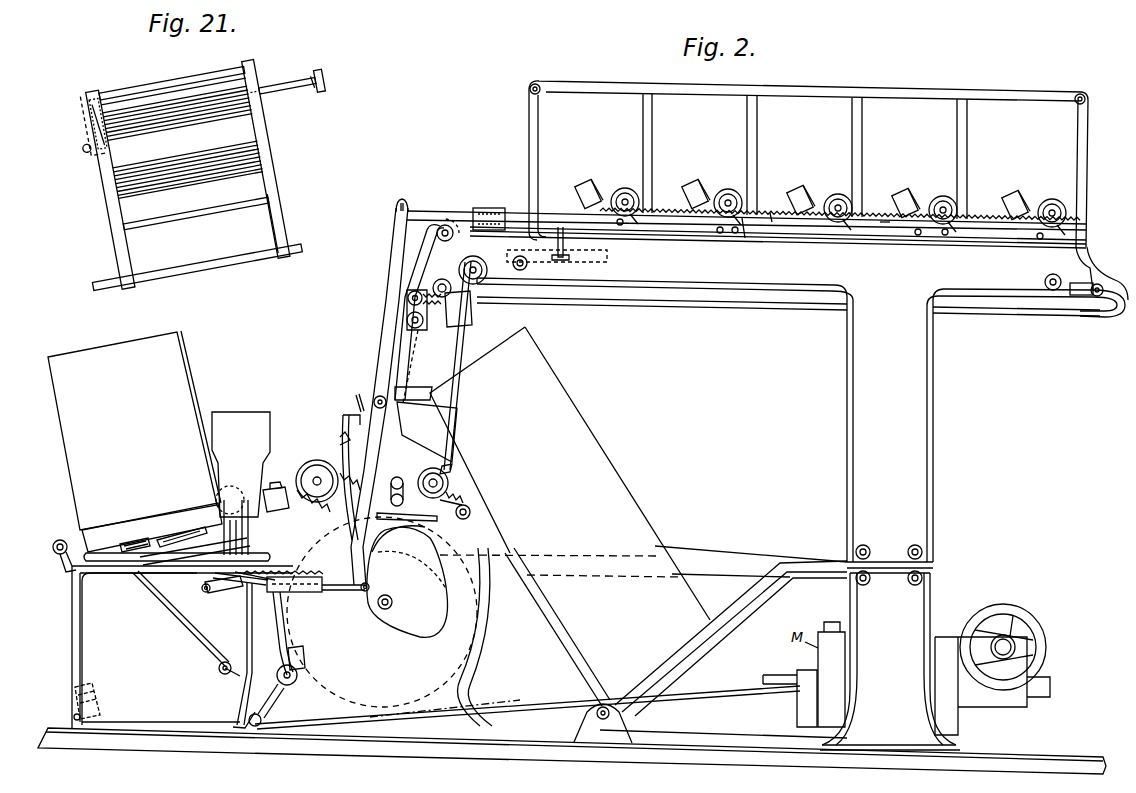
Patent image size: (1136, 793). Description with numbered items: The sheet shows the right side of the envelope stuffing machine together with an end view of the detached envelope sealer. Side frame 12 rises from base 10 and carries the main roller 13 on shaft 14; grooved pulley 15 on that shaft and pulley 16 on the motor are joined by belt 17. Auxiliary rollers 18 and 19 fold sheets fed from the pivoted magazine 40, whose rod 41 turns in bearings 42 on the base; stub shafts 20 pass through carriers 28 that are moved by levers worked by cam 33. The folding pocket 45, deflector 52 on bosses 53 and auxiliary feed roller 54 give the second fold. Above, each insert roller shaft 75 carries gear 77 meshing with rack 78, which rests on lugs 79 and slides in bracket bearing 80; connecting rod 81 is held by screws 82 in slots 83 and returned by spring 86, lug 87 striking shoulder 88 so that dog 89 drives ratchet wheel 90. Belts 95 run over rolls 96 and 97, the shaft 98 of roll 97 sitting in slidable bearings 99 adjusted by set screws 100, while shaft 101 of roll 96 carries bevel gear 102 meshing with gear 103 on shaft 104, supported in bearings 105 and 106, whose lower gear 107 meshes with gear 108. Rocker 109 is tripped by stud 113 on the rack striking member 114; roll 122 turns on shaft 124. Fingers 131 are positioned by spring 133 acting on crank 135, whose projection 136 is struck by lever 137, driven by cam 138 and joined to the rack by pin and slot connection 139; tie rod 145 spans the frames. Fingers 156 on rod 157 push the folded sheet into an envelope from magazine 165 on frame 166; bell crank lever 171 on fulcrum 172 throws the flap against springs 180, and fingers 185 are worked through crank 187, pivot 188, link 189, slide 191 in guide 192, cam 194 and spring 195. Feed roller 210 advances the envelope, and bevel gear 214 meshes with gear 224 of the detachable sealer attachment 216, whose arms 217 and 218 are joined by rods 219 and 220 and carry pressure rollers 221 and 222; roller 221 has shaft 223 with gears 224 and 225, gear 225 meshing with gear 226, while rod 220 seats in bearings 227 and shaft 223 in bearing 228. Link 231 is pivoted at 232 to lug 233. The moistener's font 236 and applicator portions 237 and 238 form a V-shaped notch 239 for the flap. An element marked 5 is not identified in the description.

In FIG. 2, the base 10 is at (750, 762).
In FIG. 2, the side frame 12 is at (934, 475).
In FIG. 2, the main roller 13 is at (402, 706).
In FIG. 2, the shaft 14 is at (384, 610).
In FIG. 2, the grooved pulley 15 is at (480, 678).
In FIG. 2, the grooved pulley 16 is at (1002, 603).
In FIG. 2, the belt 17 is at (712, 691).
In FIG. 2, the auxiliary roller 18 is at (472, 513).
In FIG. 2, the auxiliary roller 19 is at (465, 490).
In FIG. 2, the stub shafts 20 is at (440, 522).
In FIG. 2, the carriers 28 is at (470, 503).
In FIG. 2, the cam 33 is at (440, 548).
In FIG. 2, the magazine 40 is at (608, 472).
In FIG. 2, the rod 41 is at (617, 716).
In FIG. 2, the bearings 42 is at (610, 748).
In FIG. 2, the sheet folding pocket 45 is at (356, 401).
In FIG. 2, the deflector 52 is at (393, 512).
In FIG. 2, the bosses 53 is at (385, 485).
In FIG. 2, the auxiliary feed roller 54 is at (338, 440).
In FIG. 2, the S bar 5 is at (882, 260).
In FIG. 2, the shaft 75 is at (639, 203).
In FIG. 2, the gear 77 is at (620, 190).
In FIG. 2, the rack 78 is at (880, 213).
In FIG. 2, the lugs 79 is at (728, 241).
In FIG. 2, the bracket bearing 80 is at (480, 226).
In FIG. 2, the connecting rod 81 is at (706, 238).
In FIG. 2, the screws 82 is at (624, 230).
In FIG. 2, the longitudinal slots 83 is at (735, 236).
In FIG. 2, the compression spring 86 is at (498, 212).
In FIG. 2, the lug 87 is at (762, 210).
In FIG. 2, the shoulder 88 is at (745, 239).
In FIG. 2, the spring pressed dog 89 is at (648, 214).
In FIG. 2, the ratchet wheel 90 is at (637, 196).
In FIG. 2, the endless belts 95 is at (780, 307).
In FIG. 2, the roll 96 is at (525, 288).
In FIG. 2, the roll 97 is at (1093, 316).
In FIG. 2, the shaft 98 is at (1108, 277).
In FIG. 2, the slidable bearings 99 is at (1098, 283).
In FIG. 2, the set screw 100 is at (1068, 298).
In FIG. 2, the shaft 101 is at (470, 261).
In FIG. 2, the beveled gear 102 is at (459, 266).
In FIG. 2, the beveled gear 103 is at (470, 300).
In FIG. 2, the shaft 104 is at (462, 350).
In FIG. 2, the bearing 105 is at (468, 322).
In FIG. 2, the bearing 106 is at (458, 428).
In FIG. 2, the beveled gear 107 is at (450, 467).
In FIG. 2, the beveled gear 108 is at (450, 480).
In FIG. 2, the rocker 109 is at (557, 264).
In FIG. 2, the stud 113 is at (561, 222).
In FIG. 2, the upstanding member 114 is at (535, 265).
In FIG. 2, the roll 122 is at (447, 222).
In FIG. 2, the shaft 124 is at (392, 410).
In FIG. 2, the depending fingers 131 is at (392, 360).
In FIG. 2, the spring 133 is at (410, 285).
In FIG. 2, the crank 135 is at (406, 320).
In FIG. 2, the lateral projection 136 is at (407, 296).
In FIG. 2, the lever 137 is at (383, 345).
In FIG. 2, the cam 138 is at (447, 582).
In FIG. 2, the pin and slot connection 139 is at (396, 209).
In FIG. 2, the tie rod 145 is at (398, 477).
In FIG. 2, the fingers 156 is at (292, 640).
In FIG. 2, the rod 157 is at (298, 676).
In FIG. 2, the magazine 165 is at (55, 388).
In FIG. 2, the frame 166 is at (125, 528).
In FIG. 2, the bell crank lever 171 is at (247, 638).
In FIG. 2, the fulcrum 172 is at (262, 718).
In FIG. 2, the semicircular springs 180 is at (234, 488).
In FIG. 2, the fingers 185 is at (265, 621).
In FIG. 2, the crank 187 is at (228, 586).
In FIG. 2, the pivot 188 is at (201, 588).
In FIG. 2, the link 189 is at (250, 586).
In FIG. 2, the slide 191 is at (347, 592).
In FIG. 2, the guide 192 is at (312, 594).
In FIG. 2, the cam 194 is at (443, 615).
In FIG. 2, the contractile spring 195 is at (290, 575).
In FIG. 2, the rubber feed roller 210 is at (126, 562).
In FIG. 2, the beveled gear 214 is at (61, 545).
In FIG. 21, the attachment 216 is at (285, 168).
In FIG. 21, the arm 217 is at (117, 246).
In FIG. 21, the arm 218 is at (286, 222).
In FIG. 21, the cross rod 219 is at (148, 90).
In FIG. 21, the cross rod 220 is at (237, 262).
In FIG. 21, the pressure roller 221 is at (200, 88).
In FIG. 21, the pressure roller 222 is at (212, 170).
In FIG. 21, the shaft 223 is at (295, 92).
In FIG. 21, the beveled gear 224 is at (87, 153).
In FIG. 21, the beveled gear 225 is at (325, 78).
In FIG. 2, the beveled gear 226 is at (313, 460).
In FIG. 2, the bearings 227 is at (96, 710).
In FIG. 2, the bearing 228 is at (278, 486).
In FIG. 2, the link 231 is at (185, 627).
In FIG. 2, the pivot 232 is at (219, 671).
In FIG. 2, the lug 233 is at (238, 678).
In FIG. 2, the font 236 is at (243, 418).
In FIG. 2, the applicator portion 237 is at (195, 551).
In FIG. 2, the applicator portion 238 is at (164, 535).
In FIG. 2, the V-shape notch 239 is at (182, 530).